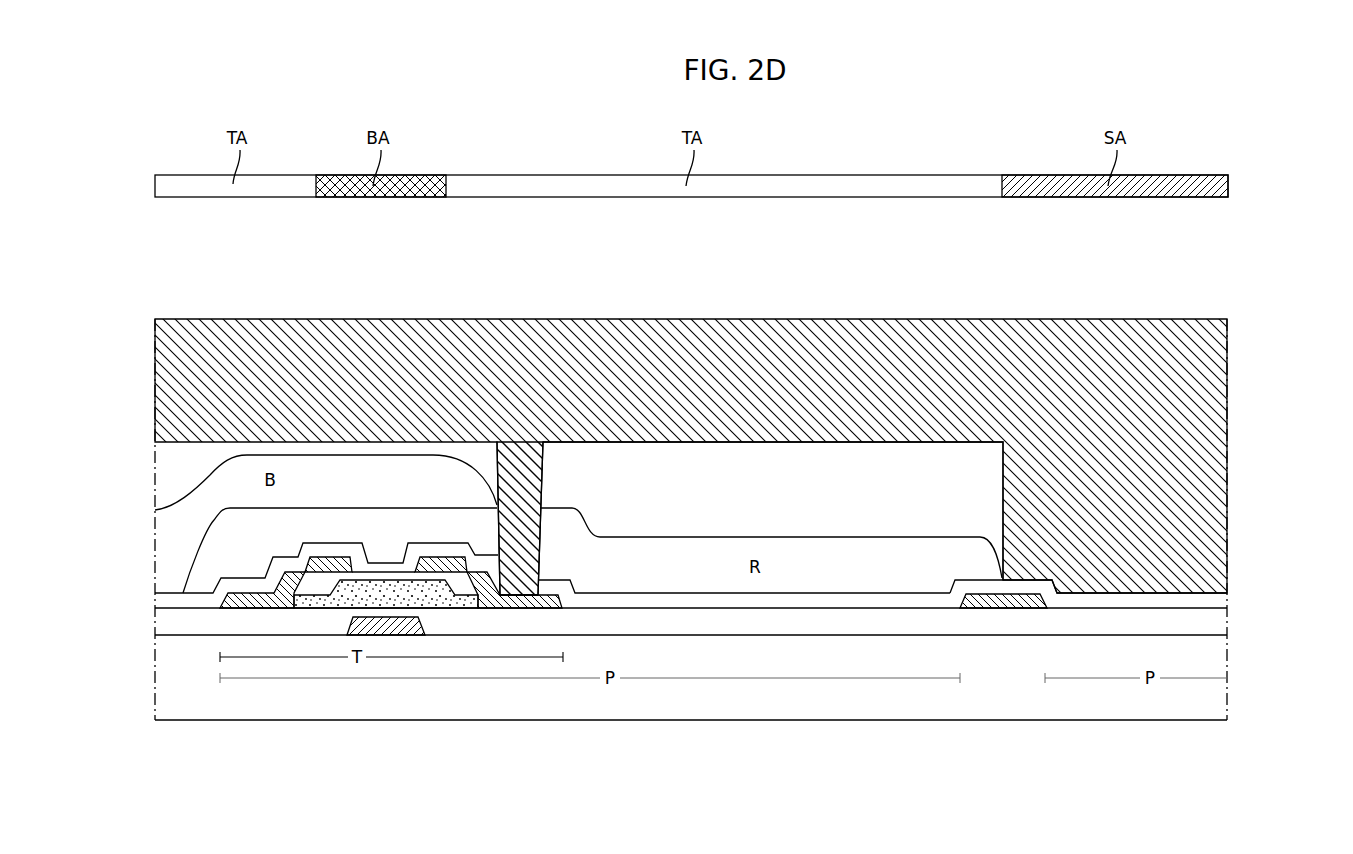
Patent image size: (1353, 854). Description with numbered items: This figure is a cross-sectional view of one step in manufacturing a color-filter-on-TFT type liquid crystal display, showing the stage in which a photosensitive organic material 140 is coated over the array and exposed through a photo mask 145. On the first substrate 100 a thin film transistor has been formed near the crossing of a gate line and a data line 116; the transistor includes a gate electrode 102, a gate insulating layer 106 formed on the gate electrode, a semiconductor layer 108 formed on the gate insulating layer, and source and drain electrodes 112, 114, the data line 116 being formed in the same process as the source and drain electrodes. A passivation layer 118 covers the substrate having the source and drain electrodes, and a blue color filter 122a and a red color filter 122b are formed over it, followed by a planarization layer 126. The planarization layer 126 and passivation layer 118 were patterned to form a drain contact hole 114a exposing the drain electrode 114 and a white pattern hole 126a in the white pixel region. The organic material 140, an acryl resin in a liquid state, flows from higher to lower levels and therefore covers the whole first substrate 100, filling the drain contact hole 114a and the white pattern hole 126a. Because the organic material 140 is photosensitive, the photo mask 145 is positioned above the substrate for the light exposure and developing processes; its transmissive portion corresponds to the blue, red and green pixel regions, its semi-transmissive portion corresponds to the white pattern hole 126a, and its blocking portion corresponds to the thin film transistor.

The first substrate 100 is at (1178, 709).
The gate electrode 102 is at (368, 634).
The gate insulating layer 106 is at (718, 607).
The semiconductor layer 108 is at (462, 601).
The source electrode 112 is at (247, 590).
The drain electrode 114 is at (553, 593).
The drain contact hole 114a is at (518, 466).
The data line 116 is at (1005, 604).
The passivation layer 118 is at (885, 603).
The blue color filter 122a is at (180, 512).
The red color filter 122b is at (825, 558).
The planarization layer 126 is at (672, 462).
The white pattern hole 126a is at (1118, 506).
The organic material 140 is at (1227, 378).
The photo mask 145 is at (1228, 186).